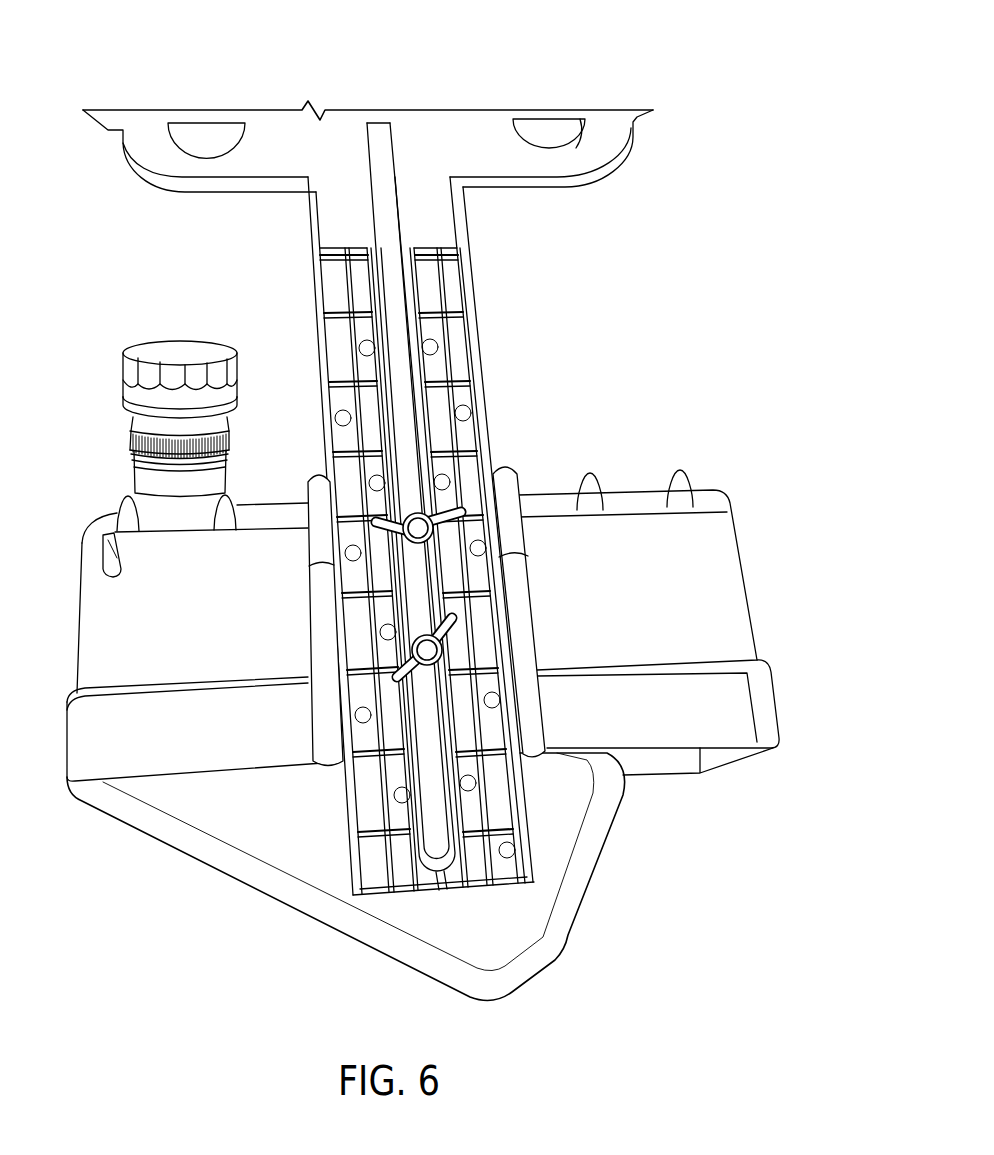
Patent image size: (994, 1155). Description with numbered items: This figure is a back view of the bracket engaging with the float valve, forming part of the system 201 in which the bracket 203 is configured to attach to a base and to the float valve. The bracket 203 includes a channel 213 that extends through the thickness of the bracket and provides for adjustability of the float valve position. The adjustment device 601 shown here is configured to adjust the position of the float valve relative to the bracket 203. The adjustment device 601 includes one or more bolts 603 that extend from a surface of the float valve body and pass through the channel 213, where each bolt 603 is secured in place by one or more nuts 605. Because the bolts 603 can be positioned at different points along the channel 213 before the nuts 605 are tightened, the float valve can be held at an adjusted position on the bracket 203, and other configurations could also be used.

The system 201 is at (652, 62).
The bracket 203 is at (306, 226).
The channel 213 is at (412, 406).
The adjustment device 601 is at (498, 486).
The bolt 603 is at (432, 648).
The nut 605 is at (457, 613).